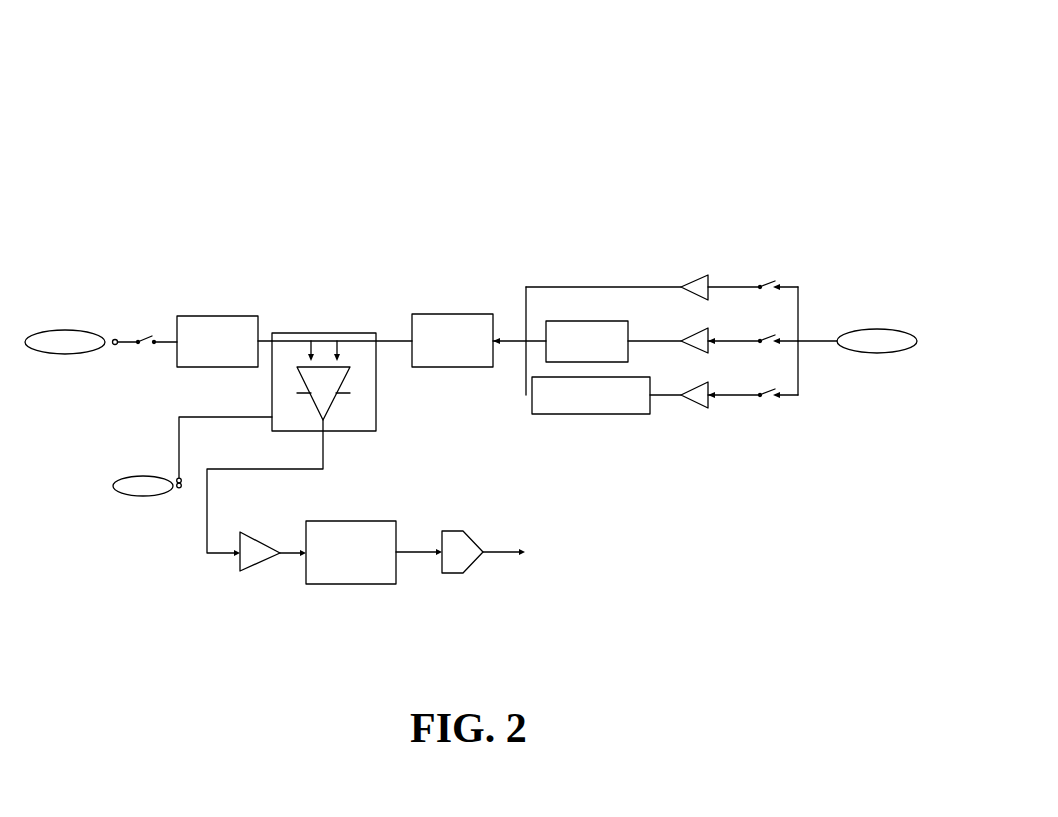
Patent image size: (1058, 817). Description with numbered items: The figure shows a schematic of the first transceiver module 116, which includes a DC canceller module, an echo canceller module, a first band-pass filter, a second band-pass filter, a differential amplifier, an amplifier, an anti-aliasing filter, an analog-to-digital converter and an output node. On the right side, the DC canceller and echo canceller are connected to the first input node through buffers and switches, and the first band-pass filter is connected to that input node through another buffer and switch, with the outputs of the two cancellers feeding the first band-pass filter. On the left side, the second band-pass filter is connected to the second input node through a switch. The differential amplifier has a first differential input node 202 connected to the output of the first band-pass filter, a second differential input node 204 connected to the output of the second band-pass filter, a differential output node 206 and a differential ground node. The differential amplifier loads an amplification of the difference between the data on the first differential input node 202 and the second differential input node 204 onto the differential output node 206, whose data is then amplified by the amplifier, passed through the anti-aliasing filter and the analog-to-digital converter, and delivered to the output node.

The first transceiver module 116 is at (650, 155).
The first differential input node 202 is at (344, 340).
The second differential input node 204 is at (299, 340).
The differential output node 206 is at (323, 420).